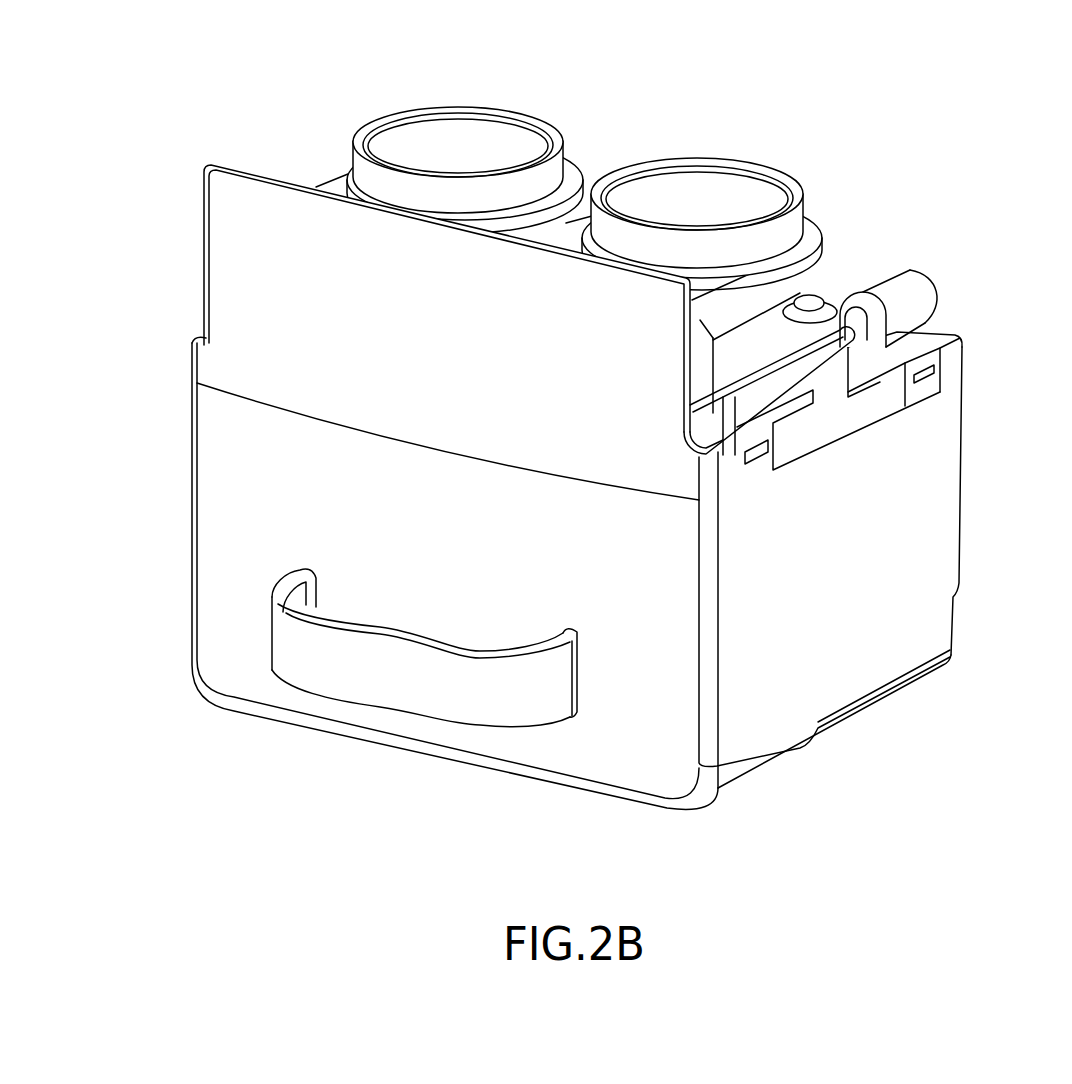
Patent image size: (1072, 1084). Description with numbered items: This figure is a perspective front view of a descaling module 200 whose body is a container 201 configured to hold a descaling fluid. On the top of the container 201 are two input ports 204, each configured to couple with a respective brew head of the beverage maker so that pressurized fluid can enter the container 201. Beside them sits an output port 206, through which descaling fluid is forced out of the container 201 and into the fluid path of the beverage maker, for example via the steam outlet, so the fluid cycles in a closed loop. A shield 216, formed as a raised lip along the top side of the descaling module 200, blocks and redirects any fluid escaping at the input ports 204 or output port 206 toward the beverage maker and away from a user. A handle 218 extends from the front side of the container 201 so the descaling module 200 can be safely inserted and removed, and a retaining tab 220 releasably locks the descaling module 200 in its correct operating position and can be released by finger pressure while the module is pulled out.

The descaling module 200 is at (149, 89).
The container 201 is at (940, 498).
The input port 204 is at (397, 126).
The output port 206 is at (912, 285).
The shield 216 is at (238, 240).
The handle 218 is at (373, 672).
The retaining tab 220 is at (700, 430).